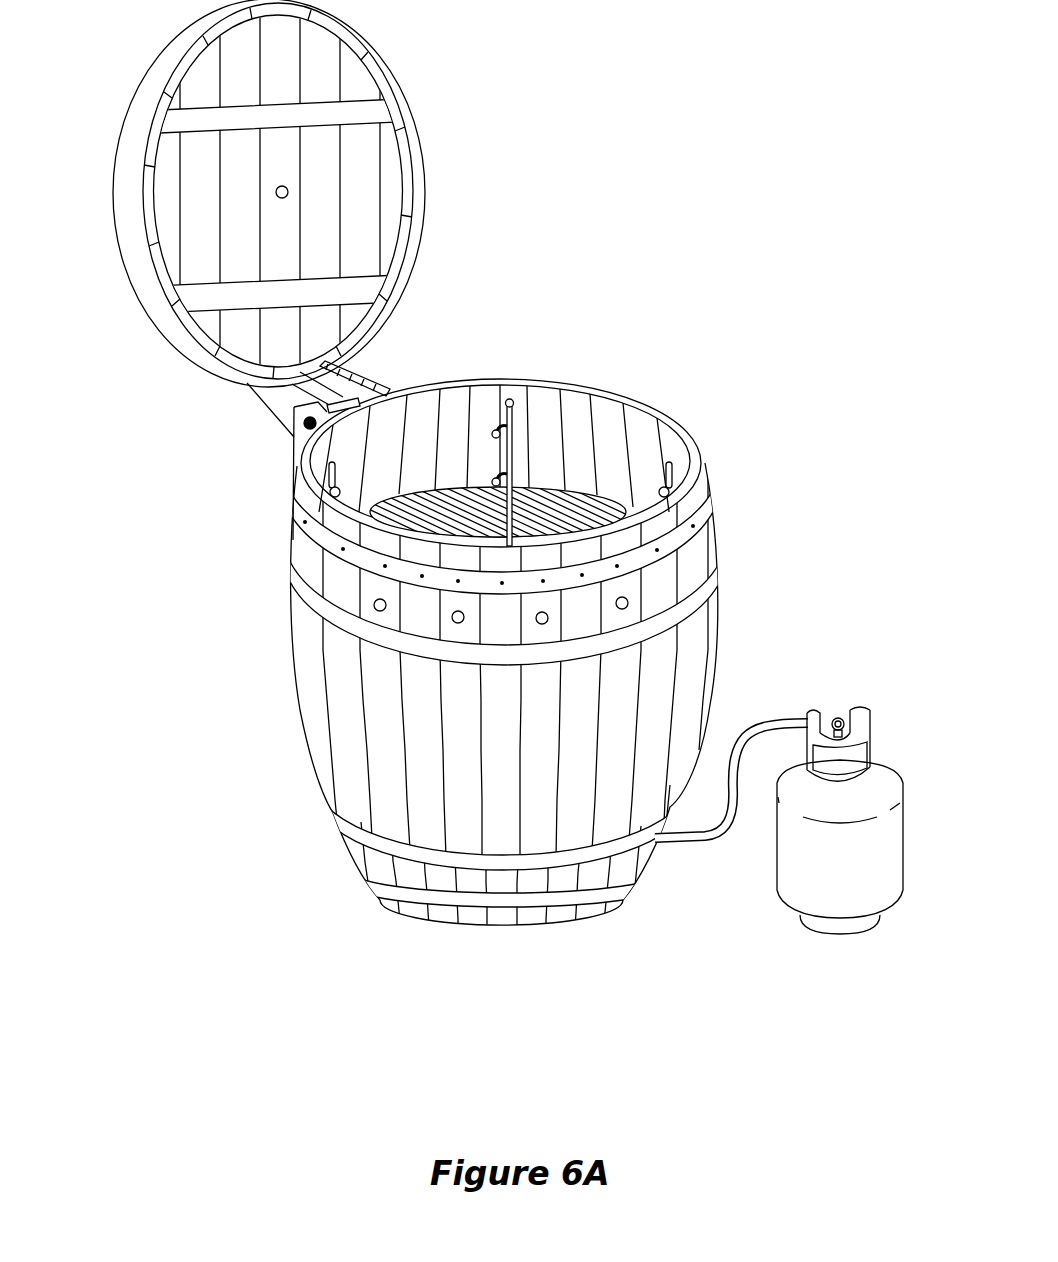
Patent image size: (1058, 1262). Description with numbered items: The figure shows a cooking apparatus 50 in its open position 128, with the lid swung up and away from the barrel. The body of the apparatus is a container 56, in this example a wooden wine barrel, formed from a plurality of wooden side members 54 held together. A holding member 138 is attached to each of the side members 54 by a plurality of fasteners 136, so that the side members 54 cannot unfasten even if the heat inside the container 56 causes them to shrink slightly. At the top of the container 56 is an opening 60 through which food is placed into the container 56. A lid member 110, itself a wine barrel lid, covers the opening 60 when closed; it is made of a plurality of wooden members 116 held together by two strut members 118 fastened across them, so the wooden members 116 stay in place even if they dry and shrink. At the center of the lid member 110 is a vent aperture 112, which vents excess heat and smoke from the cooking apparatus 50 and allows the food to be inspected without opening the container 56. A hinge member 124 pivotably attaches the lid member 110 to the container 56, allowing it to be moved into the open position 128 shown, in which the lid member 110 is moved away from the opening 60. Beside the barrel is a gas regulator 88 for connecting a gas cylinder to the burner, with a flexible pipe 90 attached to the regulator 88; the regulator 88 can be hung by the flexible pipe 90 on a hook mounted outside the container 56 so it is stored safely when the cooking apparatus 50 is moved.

The cooking apparatus 50 is at (435, 693).
The wooden side members 54 is at (490, 693).
The container 56 is at (242, 636).
The opening 60 is at (596, 368).
The gas regulator 88 is at (872, 722).
The flexible pipe 90 is at (773, 723).
The lid member 110 is at (269, 200).
The vent aperture 112 is at (288, 192).
The wooden members 116 is at (188, 211).
The strut members 118 is at (190, 127).
The hinge member 124 is at (300, 439).
The open position 128 is at (716, 162).
The fasteners 136 is at (501, 527).
The holding member 138 is at (697, 645).